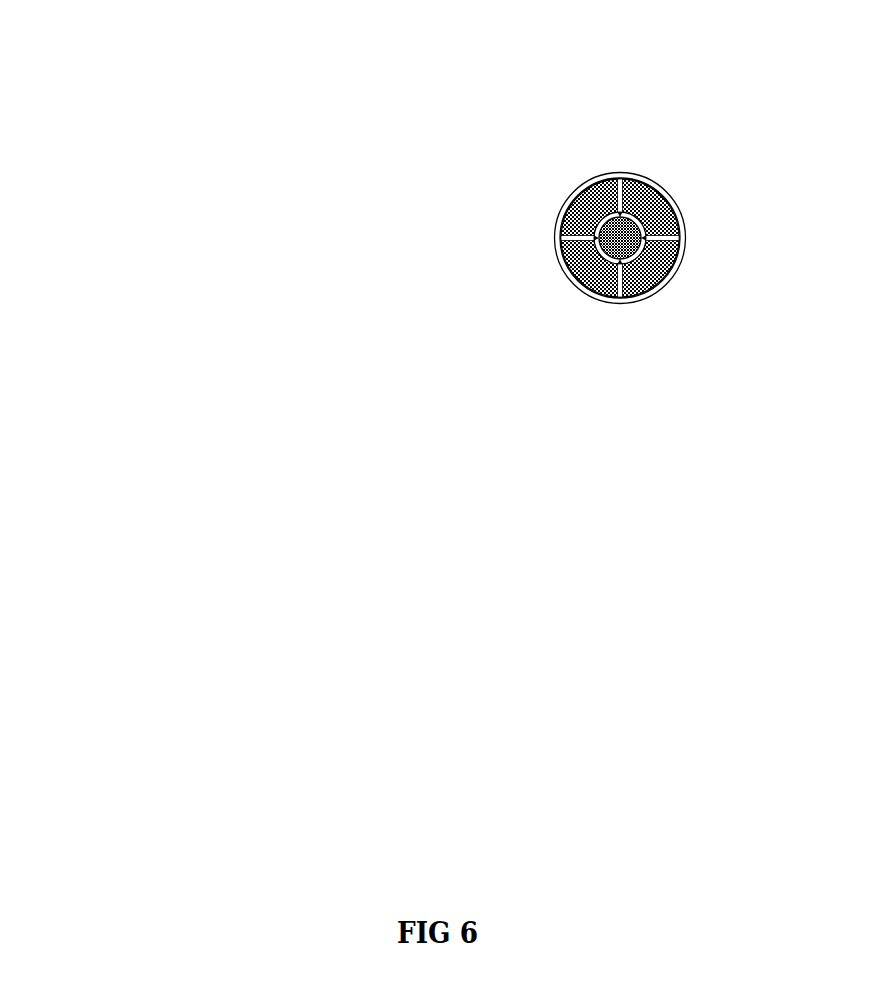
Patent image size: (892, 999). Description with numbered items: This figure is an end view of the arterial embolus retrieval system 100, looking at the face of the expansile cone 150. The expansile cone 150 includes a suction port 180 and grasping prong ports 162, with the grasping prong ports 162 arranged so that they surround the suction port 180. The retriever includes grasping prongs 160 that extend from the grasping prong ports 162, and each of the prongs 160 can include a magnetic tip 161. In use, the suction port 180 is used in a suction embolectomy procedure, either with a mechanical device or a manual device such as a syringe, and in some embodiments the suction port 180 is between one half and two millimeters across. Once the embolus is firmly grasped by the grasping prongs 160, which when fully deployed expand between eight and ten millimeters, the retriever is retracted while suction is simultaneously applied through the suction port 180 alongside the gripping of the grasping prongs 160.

The arterial embolus retrieval system 100 is at (193, 85).
The expansile cone 150 is at (557, 215).
The grasping prongs 160 is at (677, 227).
The magnetic tip 161 is at (683, 233).
The grasping prong ports 162 is at (623, 212).
The suction port 180 is at (623, 252).